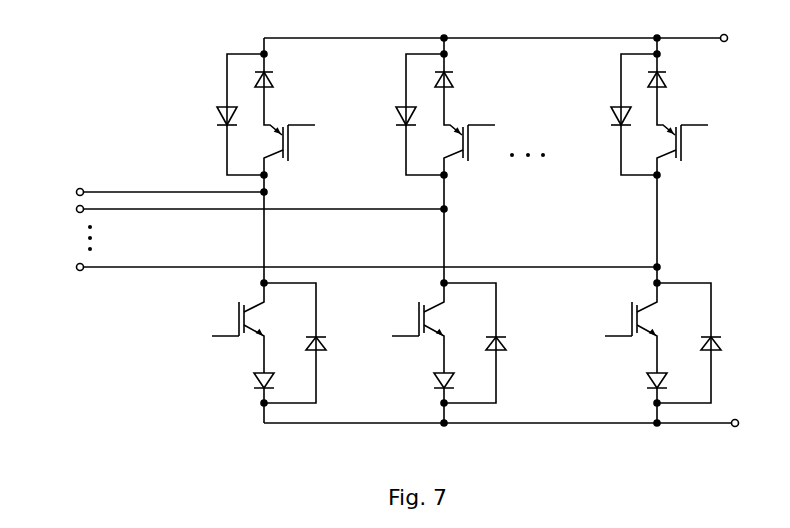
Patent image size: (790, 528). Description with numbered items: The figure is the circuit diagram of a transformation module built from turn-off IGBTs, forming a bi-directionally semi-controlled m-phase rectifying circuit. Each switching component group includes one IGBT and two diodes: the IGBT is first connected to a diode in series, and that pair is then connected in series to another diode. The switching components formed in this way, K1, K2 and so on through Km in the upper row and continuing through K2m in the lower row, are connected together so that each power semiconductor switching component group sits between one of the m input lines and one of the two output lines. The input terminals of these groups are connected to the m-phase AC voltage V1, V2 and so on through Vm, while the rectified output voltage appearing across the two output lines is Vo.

The switching component K1 is at (205, 130).
The switching component K2 is at (387, 135).
The switching component Km is at (607, 143).
The switching component K2m is at (622, 328).
The m-phases AC voltage V1 is at (151, 193).
The m-phases AC voltage V2 is at (241, 211).
The m-phases AC voltage Vm is at (347, 268).
The output voltage Vo is at (502, 56).